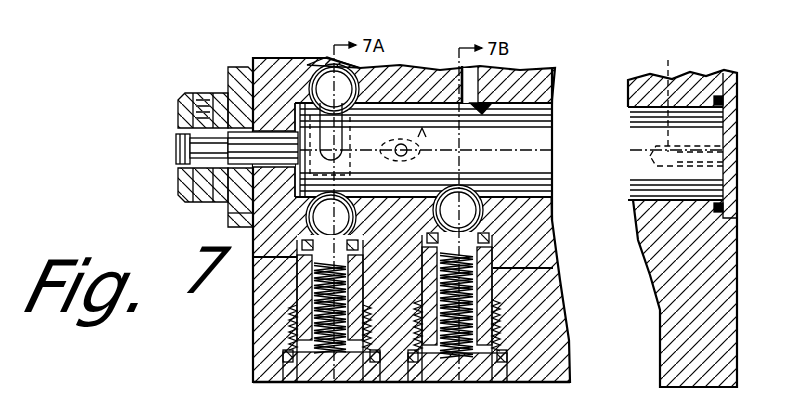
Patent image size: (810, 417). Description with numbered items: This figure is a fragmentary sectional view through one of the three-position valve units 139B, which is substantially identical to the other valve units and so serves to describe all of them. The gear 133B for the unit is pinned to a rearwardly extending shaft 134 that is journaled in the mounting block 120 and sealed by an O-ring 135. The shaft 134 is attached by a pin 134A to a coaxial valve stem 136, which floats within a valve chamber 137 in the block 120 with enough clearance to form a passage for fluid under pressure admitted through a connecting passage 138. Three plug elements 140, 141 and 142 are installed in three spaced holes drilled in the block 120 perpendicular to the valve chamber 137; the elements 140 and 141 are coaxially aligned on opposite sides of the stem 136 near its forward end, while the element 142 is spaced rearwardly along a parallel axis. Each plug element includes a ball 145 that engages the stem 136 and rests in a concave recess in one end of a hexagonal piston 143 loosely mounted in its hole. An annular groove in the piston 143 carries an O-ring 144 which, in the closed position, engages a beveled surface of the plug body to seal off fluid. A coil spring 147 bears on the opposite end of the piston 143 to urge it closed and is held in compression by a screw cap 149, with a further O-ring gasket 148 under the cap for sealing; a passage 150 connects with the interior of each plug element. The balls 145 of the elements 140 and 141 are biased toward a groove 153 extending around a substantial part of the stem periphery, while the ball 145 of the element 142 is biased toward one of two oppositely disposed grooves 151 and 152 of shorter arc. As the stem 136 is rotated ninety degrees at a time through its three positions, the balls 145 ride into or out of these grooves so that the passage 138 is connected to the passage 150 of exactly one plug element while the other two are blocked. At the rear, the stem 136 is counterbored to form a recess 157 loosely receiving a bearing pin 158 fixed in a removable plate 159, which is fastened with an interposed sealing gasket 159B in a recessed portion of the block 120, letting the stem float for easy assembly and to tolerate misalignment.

The mounting block 120 is at (553, 322).
The gear 133B is at (227, 90).
The shaft 134 is at (176, 149).
The pin 134A is at (423, 133).
The O-ring 135 is at (245, 92).
The valve stem 136 is at (537, 151).
The valve chamber 137 is at (401, 144).
The connecting passage 138 is at (471, 78).
The three-position valve unit 139B is at (200, 230).
The plug element 140 is at (331, 50).
The plug element 141 is at (300, 387).
The plug element 142 is at (438, 390).
The hexagonal piston 143 is at (317, 63).
The O-ring 144 is at (480, 240).
The ball 145 is at (320, 82).
The coil spring 147 is at (314, 322).
The O-ring gasket 148 is at (284, 352).
The screw cap 149 is at (412, 385).
The passage 150 is at (305, 272).
The groove 151 is at (468, 212).
The groove 152 is at (553, 128).
The groove 153 is at (337, 142).
The recess 157 is at (686, 103).
The bearing pin 158 is at (732, 157).
The removable plate 159 is at (737, 123).
The sealing gasket 159B is at (718, 96).